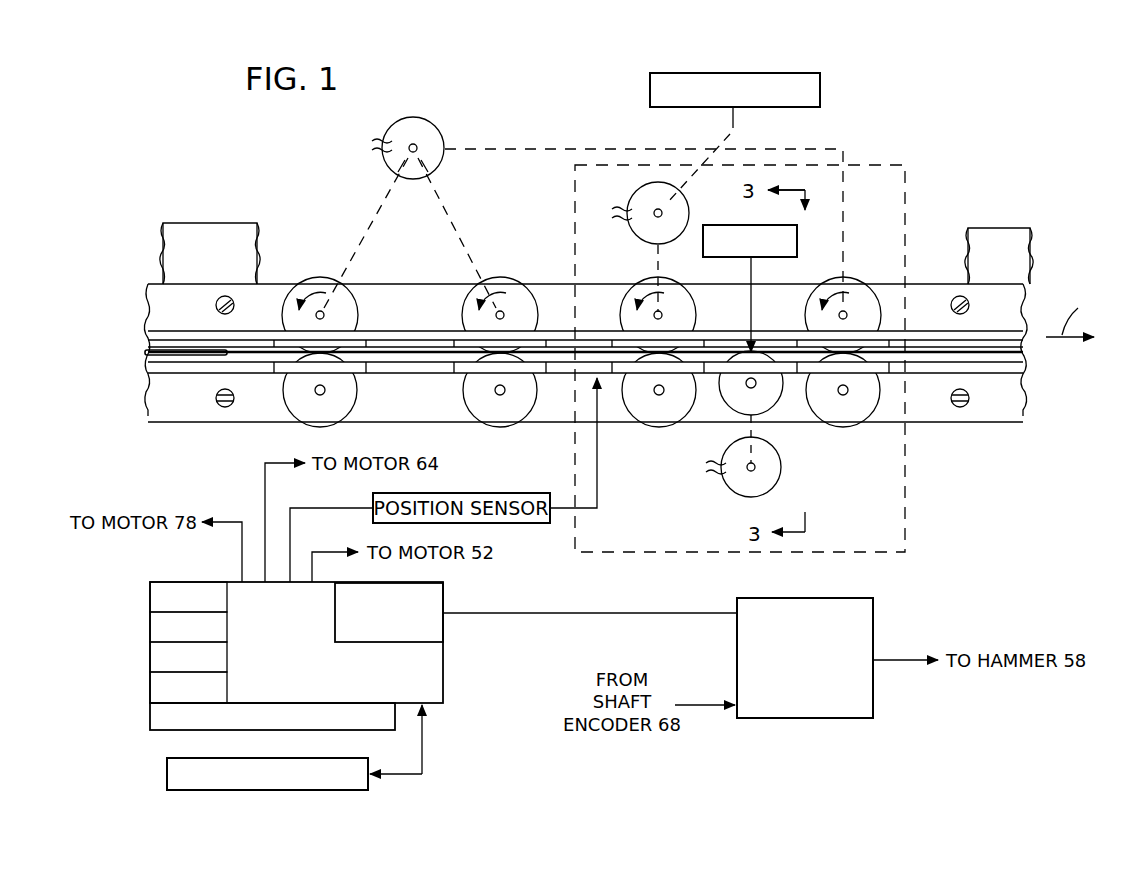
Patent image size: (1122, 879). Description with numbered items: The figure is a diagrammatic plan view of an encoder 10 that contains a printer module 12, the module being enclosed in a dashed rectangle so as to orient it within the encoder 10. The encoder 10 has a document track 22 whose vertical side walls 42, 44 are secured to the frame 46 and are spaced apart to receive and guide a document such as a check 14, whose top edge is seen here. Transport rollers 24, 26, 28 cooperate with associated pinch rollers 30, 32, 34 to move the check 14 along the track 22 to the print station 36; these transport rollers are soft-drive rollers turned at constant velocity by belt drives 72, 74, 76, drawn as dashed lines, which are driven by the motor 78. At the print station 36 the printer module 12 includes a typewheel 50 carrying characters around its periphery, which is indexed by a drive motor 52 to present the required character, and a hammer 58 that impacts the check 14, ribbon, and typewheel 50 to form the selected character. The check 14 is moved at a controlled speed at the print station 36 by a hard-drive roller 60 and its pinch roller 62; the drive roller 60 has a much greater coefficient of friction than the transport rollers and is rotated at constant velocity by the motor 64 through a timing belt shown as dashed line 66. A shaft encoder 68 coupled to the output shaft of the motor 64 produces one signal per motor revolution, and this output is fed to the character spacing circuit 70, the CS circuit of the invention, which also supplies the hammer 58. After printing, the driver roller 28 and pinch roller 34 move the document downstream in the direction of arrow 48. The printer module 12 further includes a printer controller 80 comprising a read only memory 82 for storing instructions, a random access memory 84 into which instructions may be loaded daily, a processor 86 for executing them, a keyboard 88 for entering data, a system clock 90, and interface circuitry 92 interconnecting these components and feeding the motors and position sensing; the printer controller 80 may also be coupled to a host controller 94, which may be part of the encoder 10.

The encoder 10 is at (252, 158).
The printer module 12 is at (878, 190).
The check 14 is at (190, 357).
The document track 22 is at (134, 304).
The transport roller 24 is at (333, 280).
The transport roller 26 is at (508, 281).
The transport roller 28 is at (850, 284).
The pinch roller 30 is at (313, 420).
The pinch roller 32 is at (508, 420).
The pinch roller 34 is at (838, 420).
The print station 36 is at (783, 429).
The vertical side wall 42 is at (150, 368).
The vertical side wall 44 is at (150, 338).
The frame 46 is at (190, 237).
The arrow 48 is at (1075, 311).
The typewheel 50 is at (740, 405).
The drive motor 52 is at (768, 478).
The hammer 58 is at (755, 225).
The drive roller 60 is at (675, 296).
The pinch roller 62 is at (665, 415).
The motor 64 is at (643, 199).
The timing belt 66 is at (652, 258).
The shaft encoder 68 is at (822, 85).
The character spacing circuit 70 is at (847, 723).
The belt drive 72 is at (364, 223).
The belt drive 74 is at (456, 215).
The belt drive 76 is at (503, 148).
The motor 78 is at (437, 128).
The printer controller 80 is at (148, 716).
The read only memory 82 is at (160, 600).
The random access memory 84 is at (160, 630).
The processor 86 is at (160, 660).
The keyboard 88 is at (160, 690).
The system clock 90 is at (430, 622).
The interface circuitry 92 is at (428, 670).
The host controller 94 is at (167, 766).